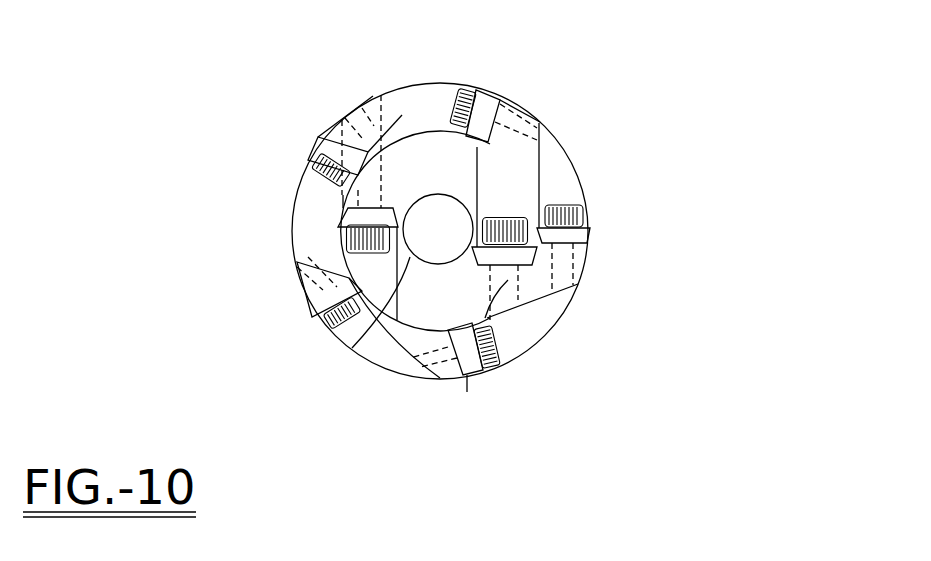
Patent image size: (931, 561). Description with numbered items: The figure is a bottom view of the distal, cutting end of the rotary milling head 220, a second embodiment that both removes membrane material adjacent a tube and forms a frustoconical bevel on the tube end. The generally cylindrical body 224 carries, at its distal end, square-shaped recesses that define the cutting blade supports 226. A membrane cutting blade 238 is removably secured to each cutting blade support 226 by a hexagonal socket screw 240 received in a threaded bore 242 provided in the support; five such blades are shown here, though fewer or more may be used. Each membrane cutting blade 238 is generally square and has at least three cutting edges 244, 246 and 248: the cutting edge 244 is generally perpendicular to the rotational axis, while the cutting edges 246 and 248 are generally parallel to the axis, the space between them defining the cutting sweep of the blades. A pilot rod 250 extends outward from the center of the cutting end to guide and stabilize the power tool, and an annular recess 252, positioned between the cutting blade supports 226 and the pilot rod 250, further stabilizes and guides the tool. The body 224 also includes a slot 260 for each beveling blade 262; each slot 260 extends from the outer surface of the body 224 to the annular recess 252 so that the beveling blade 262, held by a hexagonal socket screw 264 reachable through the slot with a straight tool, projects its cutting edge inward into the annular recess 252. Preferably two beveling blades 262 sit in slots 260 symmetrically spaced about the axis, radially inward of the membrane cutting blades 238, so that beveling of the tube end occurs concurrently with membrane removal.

The rotary milling head 220 is at (246, 143).
The cylindrical body 224 is at (291, 218).
The cutting blade support 226 is at (348, 115).
The membrane cutting blade 238 is at (318, 137).
The hexagonal socket screw 240 is at (315, 316).
The threaded bore 242 is at (567, 278).
The cutting edge 244 is at (473, 88).
The cutting edge 246 is at (539, 143).
The cutting edge 248 is at (486, 90).
The pilot rod 250 is at (400, 327).
The annular recess 252 is at (408, 357).
The slot 260 is at (507, 175).
The beveling blade 262 is at (299, 187).
The hexagonal socket screw 264 is at (340, 238).